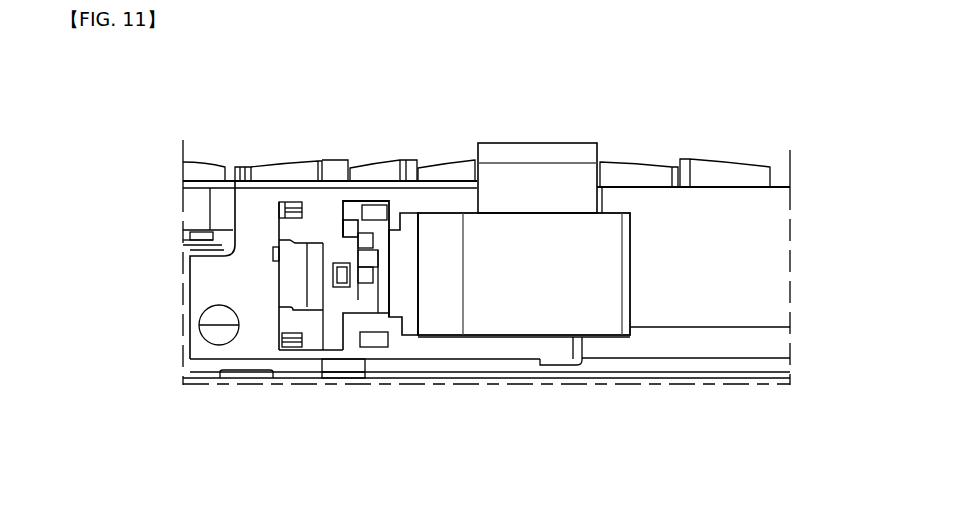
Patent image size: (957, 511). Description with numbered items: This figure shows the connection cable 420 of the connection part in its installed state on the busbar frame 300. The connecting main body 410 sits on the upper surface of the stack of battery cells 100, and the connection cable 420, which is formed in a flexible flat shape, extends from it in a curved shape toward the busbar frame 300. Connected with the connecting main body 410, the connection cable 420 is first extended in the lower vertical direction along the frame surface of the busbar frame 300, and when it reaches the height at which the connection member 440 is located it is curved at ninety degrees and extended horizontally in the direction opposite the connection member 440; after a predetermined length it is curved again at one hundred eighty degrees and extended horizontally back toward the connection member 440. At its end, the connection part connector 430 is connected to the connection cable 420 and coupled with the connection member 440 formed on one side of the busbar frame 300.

The battery cell 100 is at (724, 172).
The busbar frame 300 is at (757, 257).
The connecting main body 410 is at (537, 147).
The connection cable 420 is at (520, 302).
The connection part connector 430 is at (375, 273).
The connection member 440 is at (315, 307).